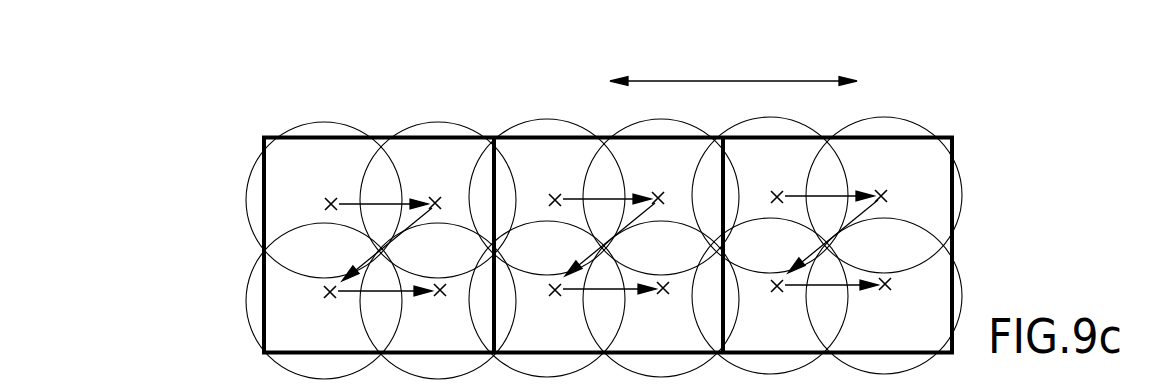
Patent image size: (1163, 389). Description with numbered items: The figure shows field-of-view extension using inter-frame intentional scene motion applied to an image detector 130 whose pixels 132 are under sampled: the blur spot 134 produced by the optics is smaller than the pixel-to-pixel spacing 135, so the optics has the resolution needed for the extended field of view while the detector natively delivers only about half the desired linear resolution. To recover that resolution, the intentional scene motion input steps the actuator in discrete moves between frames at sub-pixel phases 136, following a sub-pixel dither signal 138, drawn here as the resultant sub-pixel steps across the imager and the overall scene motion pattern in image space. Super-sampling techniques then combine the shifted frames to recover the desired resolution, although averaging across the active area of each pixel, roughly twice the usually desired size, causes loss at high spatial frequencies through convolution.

The image detector 130 is at (153, 172).
The pixels 132 is at (262, 134).
The blur spot 134 is at (248, 310).
The pixel-to-pixel spacing 135 is at (712, 80).
The sub-pixel phases 136 is at (430, 198).
The sub-pixel dither signal 138 is at (627, 222).